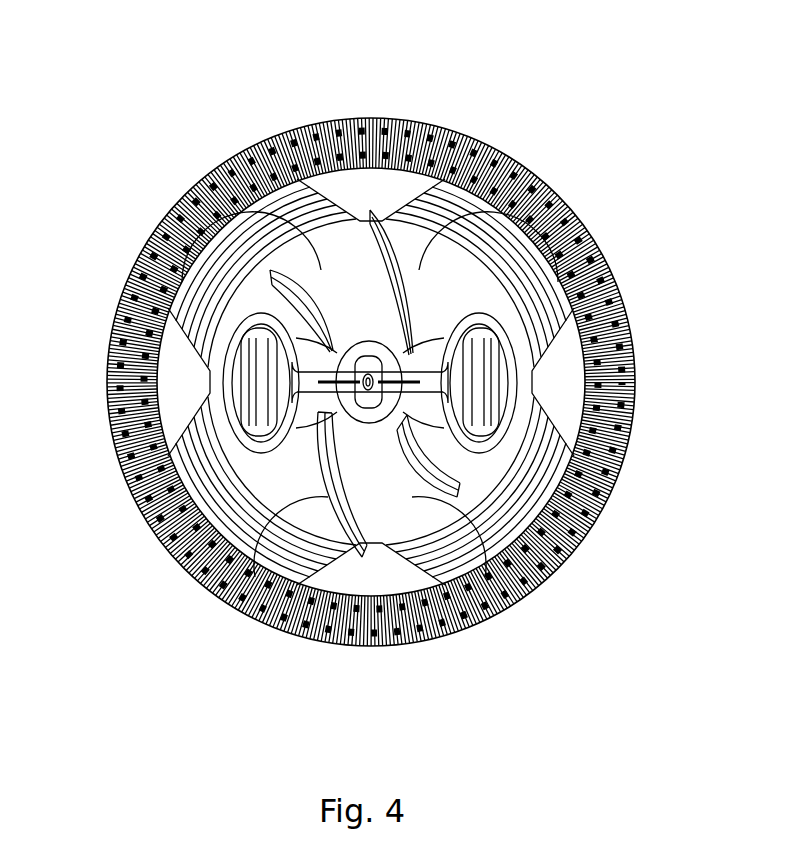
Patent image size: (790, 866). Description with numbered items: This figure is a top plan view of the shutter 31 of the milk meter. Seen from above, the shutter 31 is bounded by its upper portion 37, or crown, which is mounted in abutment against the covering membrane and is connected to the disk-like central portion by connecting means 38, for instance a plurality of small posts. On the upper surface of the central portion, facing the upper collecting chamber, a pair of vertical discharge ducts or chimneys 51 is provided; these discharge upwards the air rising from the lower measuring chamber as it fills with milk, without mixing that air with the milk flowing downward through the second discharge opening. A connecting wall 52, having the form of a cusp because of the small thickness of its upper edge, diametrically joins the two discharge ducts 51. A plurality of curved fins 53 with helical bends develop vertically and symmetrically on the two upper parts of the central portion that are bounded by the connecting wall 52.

The shutter 31 is at (630, 163).
The upper portion 37 is at (415, 121).
The connecting means 38 is at (372, 190).
The vertical discharge duct 51 is at (196, 300).
The connecting wall 52 is at (586, 275).
The curved fins 53 is at (215, 168).